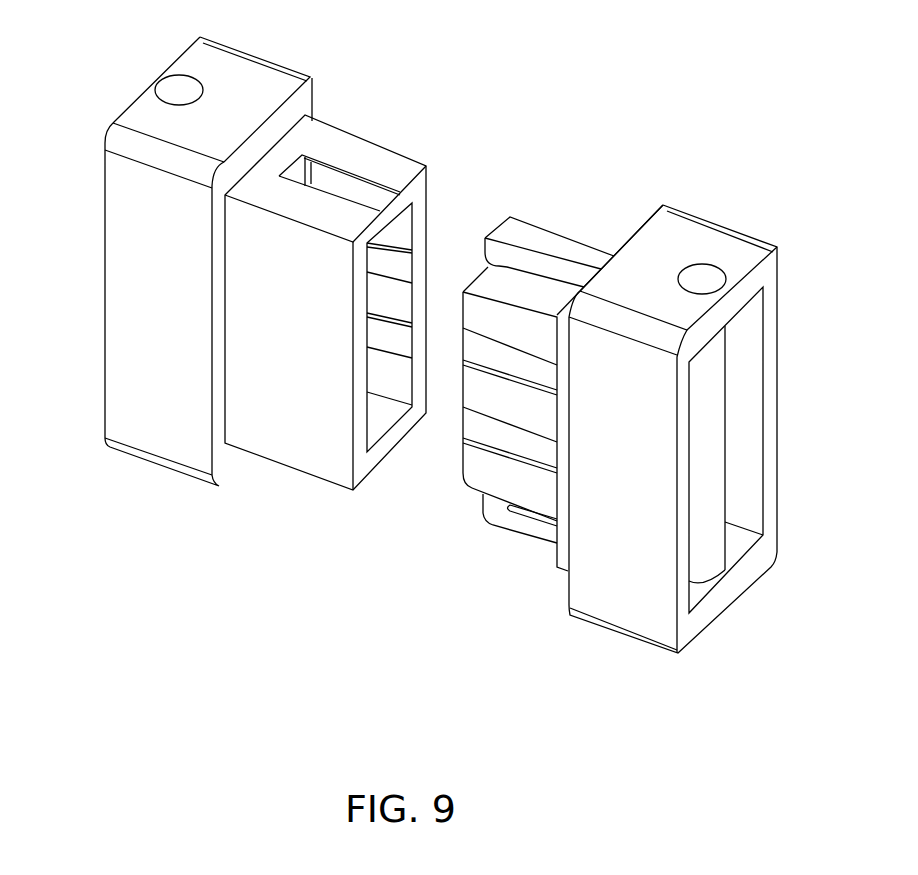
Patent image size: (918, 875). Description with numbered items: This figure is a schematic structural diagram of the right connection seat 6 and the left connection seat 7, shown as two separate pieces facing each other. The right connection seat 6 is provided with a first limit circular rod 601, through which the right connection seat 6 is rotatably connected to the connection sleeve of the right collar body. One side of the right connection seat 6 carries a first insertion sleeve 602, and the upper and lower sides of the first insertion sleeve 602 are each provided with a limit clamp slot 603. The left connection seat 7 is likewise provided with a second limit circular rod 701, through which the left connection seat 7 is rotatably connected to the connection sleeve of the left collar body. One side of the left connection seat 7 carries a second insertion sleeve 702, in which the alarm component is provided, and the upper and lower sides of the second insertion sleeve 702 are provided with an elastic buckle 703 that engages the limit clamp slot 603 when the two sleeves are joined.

The right connection seat 6 is at (155, 355).
The first limit circular rod 601 is at (180, 90).
The first insertion sleeve 602 is at (300, 410).
The limit clamp slot 603 is at (312, 175).
The left connection seat 7 is at (608, 567).
The second limit circular rod 701 is at (712, 445).
The second insertion sleeve 702 is at (505, 455).
The elastic buckle 703 is at (515, 240).